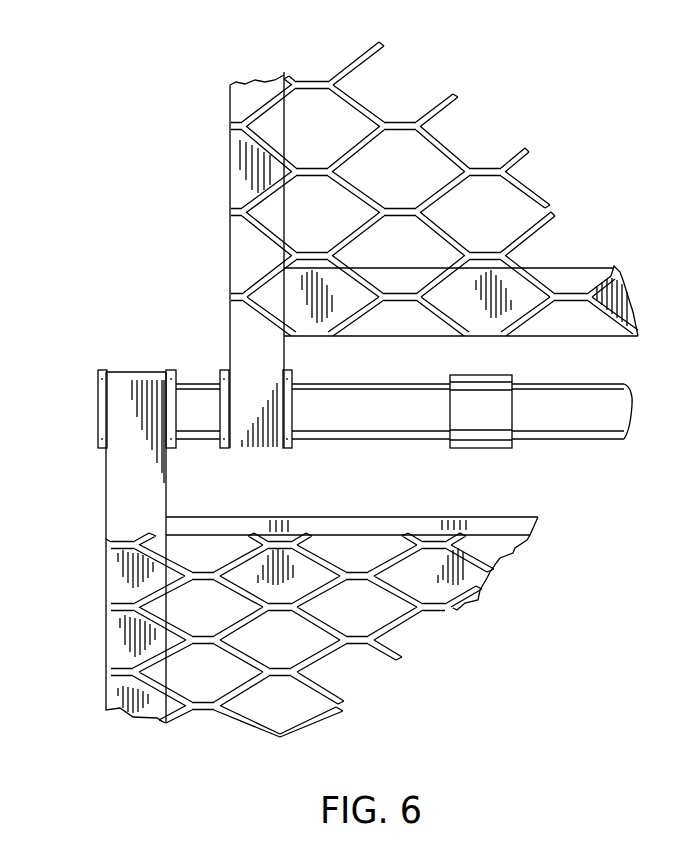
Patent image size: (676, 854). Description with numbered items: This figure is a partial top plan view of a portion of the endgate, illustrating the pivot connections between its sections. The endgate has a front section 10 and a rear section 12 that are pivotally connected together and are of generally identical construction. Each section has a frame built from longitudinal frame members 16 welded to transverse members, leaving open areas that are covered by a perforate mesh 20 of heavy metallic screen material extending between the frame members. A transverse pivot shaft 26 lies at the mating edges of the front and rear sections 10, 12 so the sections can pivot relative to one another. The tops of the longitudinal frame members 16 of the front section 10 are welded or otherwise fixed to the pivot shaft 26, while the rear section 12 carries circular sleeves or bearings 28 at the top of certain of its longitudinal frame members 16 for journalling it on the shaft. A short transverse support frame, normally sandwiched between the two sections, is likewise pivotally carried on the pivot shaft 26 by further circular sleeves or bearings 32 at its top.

The front section 10 is at (342, 375).
The rear section 12 is at (306, 57).
The longitudinal frame members 16 is at (237, 153).
The perforate mesh 20 is at (340, 695).
The transverse pivot shaft 26 is at (567, 422).
The circular sleeves or bearings 28 is at (288, 368).
The circular sleeves or bearings 32 is at (478, 422).